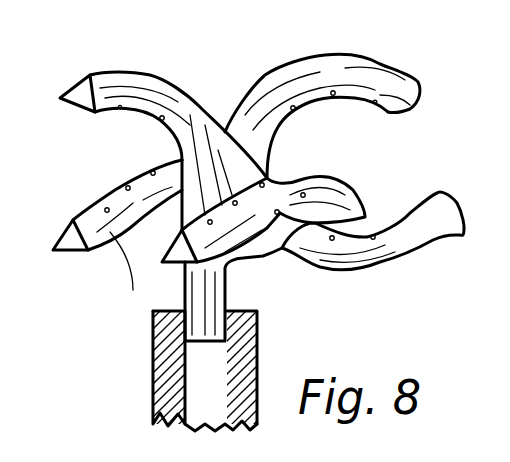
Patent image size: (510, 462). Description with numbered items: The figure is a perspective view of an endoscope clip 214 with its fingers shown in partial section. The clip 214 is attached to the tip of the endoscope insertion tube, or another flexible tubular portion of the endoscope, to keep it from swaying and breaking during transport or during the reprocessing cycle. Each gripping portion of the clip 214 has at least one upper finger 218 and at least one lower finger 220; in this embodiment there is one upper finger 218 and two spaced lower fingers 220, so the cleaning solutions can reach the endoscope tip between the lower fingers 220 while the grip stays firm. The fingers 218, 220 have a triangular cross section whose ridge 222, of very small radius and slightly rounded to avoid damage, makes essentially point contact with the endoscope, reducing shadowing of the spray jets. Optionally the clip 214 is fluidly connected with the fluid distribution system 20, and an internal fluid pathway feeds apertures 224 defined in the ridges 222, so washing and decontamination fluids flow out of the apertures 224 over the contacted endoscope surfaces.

The clip 214 is at (98, 58).
The upper finger 218 is at (285, 75).
The lower finger 220 is at (133, 264).
The ridge 222 is at (137, 108).
The apertures 224 is at (153, 171).
The fluid distribution system 20 is at (154, 393).